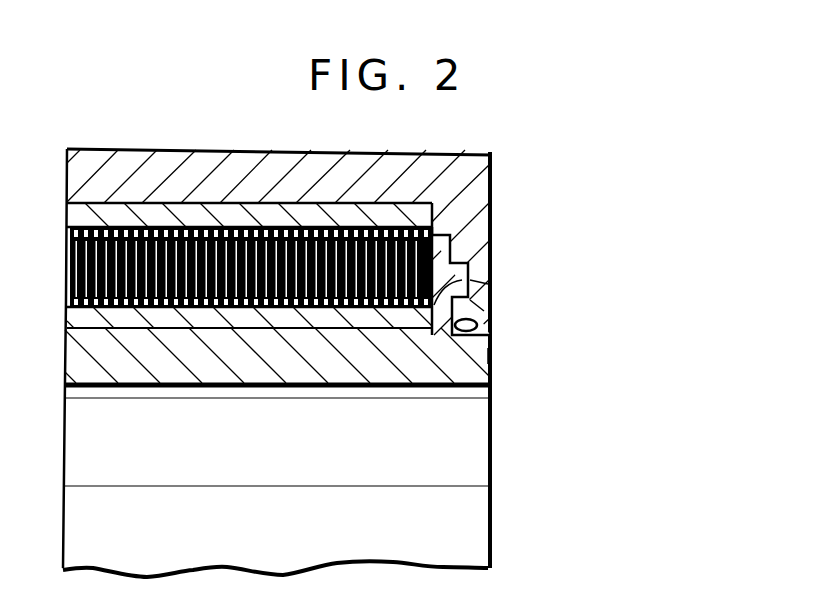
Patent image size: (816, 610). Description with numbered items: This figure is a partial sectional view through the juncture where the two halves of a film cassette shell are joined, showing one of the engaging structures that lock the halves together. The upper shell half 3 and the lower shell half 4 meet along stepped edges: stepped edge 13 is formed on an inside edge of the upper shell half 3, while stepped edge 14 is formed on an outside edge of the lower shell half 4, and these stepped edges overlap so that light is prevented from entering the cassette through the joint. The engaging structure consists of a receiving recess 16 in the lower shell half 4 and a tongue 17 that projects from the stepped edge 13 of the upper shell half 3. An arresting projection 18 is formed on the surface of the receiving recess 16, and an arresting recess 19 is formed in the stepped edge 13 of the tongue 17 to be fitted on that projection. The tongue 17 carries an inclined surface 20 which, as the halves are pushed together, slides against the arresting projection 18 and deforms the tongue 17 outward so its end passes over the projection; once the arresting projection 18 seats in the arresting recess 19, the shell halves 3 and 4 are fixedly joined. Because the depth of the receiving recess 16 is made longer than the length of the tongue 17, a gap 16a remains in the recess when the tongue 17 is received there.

The upper shell half 3 is at (494, 200).
The lower shell half 4 is at (494, 383).
The stepped edge 13 is at (481, 268).
The stepped edge 14 is at (441, 235).
The receiving recess 16 is at (457, 338).
The gap 16a is at (485, 337).
The tongue 17 is at (484, 311).
The arresting projection 18 is at (433, 308).
The arresting recess 19 is at (494, 286).
The inclined surface 20 is at (493, 356).